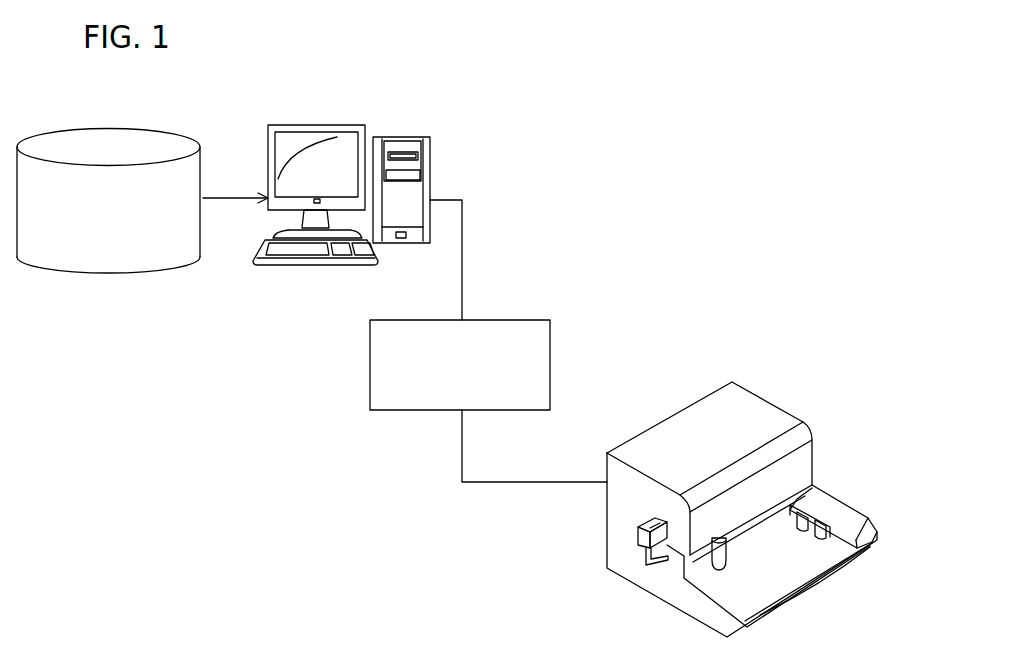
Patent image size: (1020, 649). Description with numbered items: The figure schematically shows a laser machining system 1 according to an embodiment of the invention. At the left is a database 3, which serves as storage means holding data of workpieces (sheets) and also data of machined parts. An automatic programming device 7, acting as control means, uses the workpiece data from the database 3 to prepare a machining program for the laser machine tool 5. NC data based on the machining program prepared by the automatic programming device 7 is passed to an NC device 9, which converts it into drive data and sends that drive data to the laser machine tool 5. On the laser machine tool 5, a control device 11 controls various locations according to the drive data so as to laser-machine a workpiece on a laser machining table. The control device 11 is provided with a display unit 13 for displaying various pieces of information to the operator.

The laser machining system 1 is at (728, 179).
The database 3 is at (118, 128).
The laser machine tool 5 is at (760, 413).
The automatic programming device 7 is at (385, 124).
The NC device 9 is at (520, 319).
The control device 11 is at (637, 540).
The display unit 13 is at (652, 522).